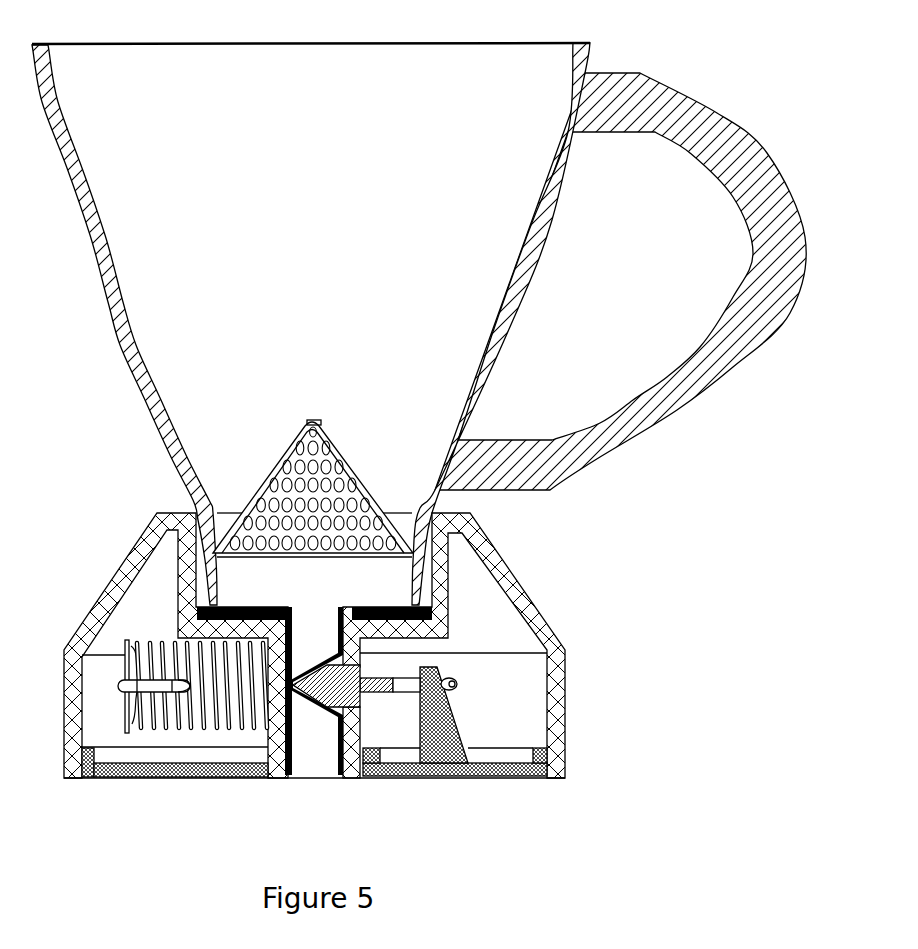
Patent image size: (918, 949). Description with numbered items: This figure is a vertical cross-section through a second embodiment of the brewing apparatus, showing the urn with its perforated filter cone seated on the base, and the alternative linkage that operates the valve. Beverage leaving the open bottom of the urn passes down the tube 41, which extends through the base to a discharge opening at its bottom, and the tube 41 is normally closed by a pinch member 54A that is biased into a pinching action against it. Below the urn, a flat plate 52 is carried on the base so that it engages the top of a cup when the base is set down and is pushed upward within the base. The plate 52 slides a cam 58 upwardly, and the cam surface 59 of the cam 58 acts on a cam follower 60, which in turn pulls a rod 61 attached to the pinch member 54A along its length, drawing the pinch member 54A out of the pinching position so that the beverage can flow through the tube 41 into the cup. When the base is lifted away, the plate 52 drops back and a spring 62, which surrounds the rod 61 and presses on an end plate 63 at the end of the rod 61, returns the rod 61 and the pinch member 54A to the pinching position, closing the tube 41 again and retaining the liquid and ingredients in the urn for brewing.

The tube 41 is at (296, 733).
The plate 52 is at (488, 776).
The pinch member 54A is at (320, 713).
The cam 58 is at (460, 735).
The cam surface 59 is at (455, 713).
The cam follower 60 is at (460, 682).
The rod 61 is at (380, 690).
The spring 62 is at (167, 712).
The end plate 63 is at (124, 712).